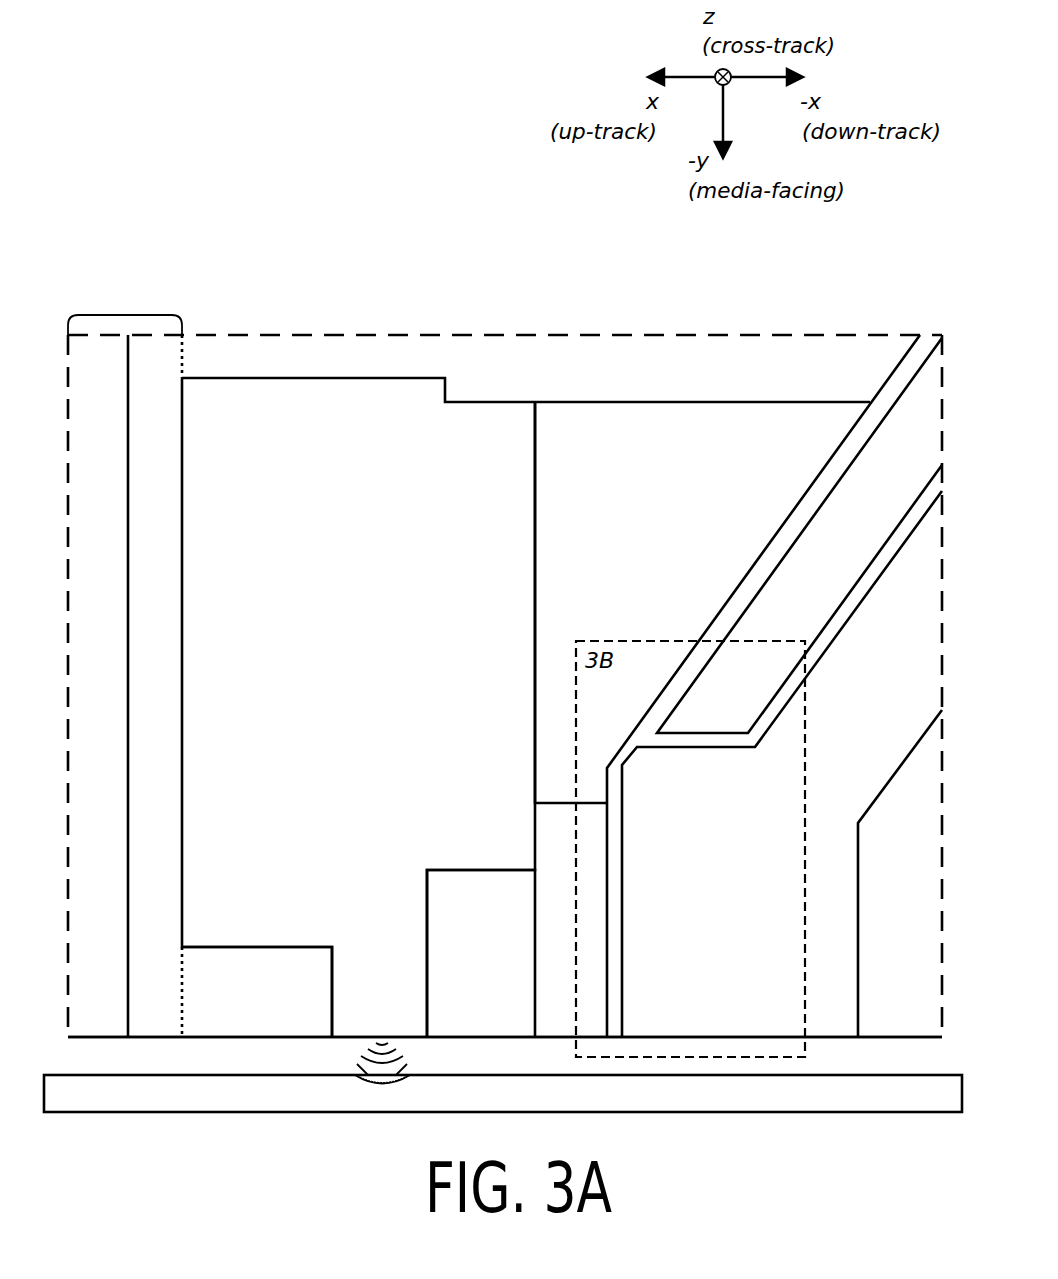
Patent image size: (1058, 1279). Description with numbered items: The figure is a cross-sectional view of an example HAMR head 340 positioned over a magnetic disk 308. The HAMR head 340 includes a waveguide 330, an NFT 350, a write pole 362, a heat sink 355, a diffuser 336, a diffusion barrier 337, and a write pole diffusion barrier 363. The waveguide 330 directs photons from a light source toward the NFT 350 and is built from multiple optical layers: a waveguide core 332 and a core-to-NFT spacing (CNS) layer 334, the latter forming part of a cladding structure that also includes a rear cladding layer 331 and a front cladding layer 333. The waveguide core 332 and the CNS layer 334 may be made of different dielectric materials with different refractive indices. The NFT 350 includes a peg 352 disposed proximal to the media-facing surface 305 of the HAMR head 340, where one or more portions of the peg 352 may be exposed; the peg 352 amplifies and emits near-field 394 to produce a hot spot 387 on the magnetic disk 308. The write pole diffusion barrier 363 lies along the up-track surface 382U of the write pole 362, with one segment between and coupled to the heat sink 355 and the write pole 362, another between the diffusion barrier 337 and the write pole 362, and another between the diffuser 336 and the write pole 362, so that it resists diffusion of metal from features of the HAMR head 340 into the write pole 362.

The HAMR head 340 is at (472, 290).
The waveguide 330 is at (125, 315).
The rear cladding layer 331 is at (337, 373).
The waveguide core 332 is at (122, 701).
The core-to-NFT spacing (CNS) layer 334 is at (178, 701).
The front cladding layer 333 is at (280, 1006).
The NFT 350 is at (382, 679).
The peg 352 is at (437, 992).
The heat sink 355 is at (685, 535).
The diffuser 336 is at (760, 701).
The diffusion barrier 337 is at (694, 670).
The up-track surface 382U is at (623, 825).
The write pole diffusion barrier 363 is at (612, 883).
The write pole 362 is at (765, 899).
The media-facing surface 305 is at (202, 1038).
The near-field 394 is at (356, 1051).
The hot spot 387 is at (400, 1084).
The magnetic disk 308 is at (112, 1111).